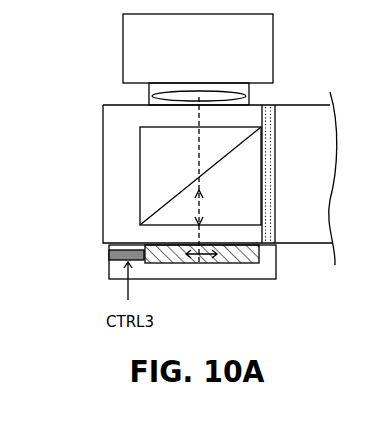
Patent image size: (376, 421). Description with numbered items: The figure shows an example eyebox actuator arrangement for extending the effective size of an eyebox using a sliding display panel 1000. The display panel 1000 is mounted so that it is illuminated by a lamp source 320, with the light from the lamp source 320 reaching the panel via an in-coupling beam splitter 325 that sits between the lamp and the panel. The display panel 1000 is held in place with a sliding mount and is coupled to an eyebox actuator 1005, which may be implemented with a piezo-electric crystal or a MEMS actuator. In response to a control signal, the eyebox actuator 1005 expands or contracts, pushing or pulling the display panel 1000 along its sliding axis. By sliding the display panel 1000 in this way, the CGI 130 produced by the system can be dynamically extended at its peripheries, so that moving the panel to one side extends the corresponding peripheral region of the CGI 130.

The CGI 130 is at (200, 208).
The lamp source 320 is at (186, 70).
The in-coupling beam splitter 325 is at (172, 152).
The display panel 1000 is at (248, 263).
The eyebox actuator 1005 is at (110, 253).